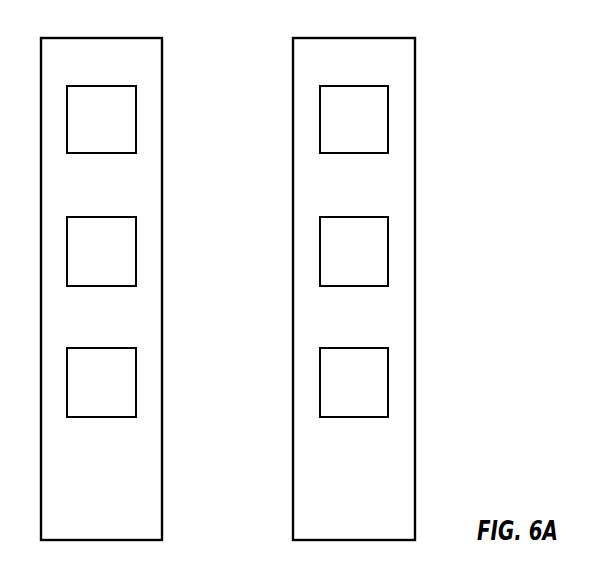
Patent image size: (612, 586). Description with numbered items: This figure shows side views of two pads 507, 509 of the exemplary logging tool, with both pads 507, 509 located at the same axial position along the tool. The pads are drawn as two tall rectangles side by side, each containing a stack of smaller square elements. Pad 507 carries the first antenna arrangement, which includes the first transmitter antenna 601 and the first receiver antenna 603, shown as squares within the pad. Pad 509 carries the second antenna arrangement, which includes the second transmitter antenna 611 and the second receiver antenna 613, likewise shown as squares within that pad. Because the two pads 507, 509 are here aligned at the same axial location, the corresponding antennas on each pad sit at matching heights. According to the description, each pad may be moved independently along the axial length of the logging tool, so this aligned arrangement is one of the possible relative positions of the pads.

The pad 507 is at (162, 58).
The pad 509 is at (415, 58).
The first transmitter antenna 601 is at (136, 108).
The first receiver antenna 603 is at (136, 242).
The second transmitter antenna 611 is at (388, 108).
The second receiver antenna 613 is at (388, 242).